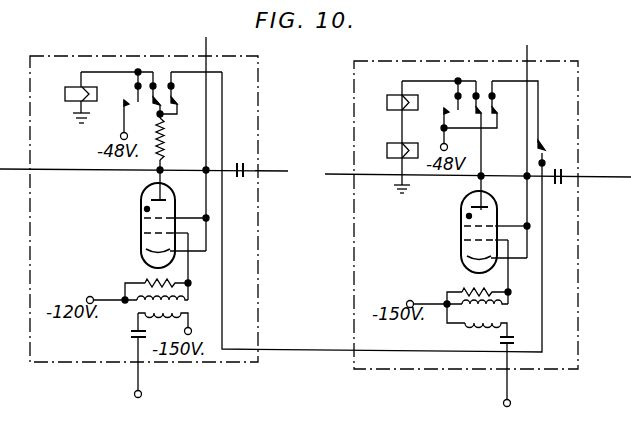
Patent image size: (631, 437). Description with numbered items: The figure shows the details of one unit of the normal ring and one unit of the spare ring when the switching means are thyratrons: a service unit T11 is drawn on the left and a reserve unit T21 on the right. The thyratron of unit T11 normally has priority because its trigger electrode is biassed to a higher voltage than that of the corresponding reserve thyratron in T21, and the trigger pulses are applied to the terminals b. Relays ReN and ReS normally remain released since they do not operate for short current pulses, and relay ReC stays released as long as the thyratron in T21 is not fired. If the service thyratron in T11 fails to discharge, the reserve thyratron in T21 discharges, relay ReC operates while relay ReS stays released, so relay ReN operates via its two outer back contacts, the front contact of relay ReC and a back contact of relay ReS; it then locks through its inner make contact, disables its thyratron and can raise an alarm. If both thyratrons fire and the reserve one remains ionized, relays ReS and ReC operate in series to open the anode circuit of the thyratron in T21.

The service ring thyratron unit T11 is at (64, 64).
The reserve ring thyratron unit T21 is at (392, 72).
The relay ReN is at (68, 97).
The relay ReS is at (390, 93).
The relay ReC is at (390, 137).
The trigger pulse terminal b is at (322, 386).